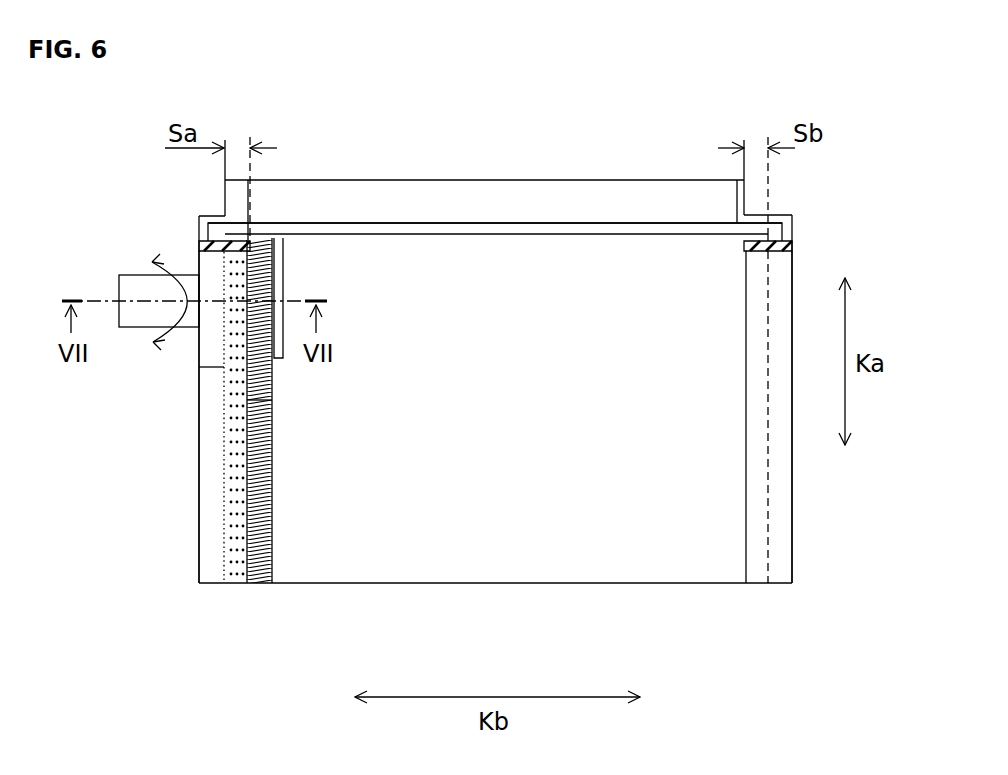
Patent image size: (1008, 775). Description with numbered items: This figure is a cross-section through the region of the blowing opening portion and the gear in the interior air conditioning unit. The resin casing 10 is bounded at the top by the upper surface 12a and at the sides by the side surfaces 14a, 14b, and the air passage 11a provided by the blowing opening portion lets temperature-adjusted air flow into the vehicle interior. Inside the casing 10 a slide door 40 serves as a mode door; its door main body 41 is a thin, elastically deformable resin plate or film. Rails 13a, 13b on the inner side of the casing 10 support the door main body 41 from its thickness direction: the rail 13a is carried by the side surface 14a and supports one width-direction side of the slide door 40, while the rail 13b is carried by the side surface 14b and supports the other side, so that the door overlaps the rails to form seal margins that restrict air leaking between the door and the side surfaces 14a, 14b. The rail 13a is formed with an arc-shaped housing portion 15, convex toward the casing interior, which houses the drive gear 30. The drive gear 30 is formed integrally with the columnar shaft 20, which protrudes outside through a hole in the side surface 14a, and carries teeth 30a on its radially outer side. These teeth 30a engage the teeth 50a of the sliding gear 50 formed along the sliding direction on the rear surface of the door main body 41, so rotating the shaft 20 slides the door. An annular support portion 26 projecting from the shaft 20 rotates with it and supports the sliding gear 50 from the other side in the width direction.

The casing 10 is at (796, 500).
The air passage 11a is at (690, 195).
The upper surface 12a is at (780, 213).
The rail 13a is at (212, 568).
The rail 13b is at (782, 565).
The side surface 14a is at (212, 502).
The side surface 14b is at (793, 467).
The housing portion 15 is at (206, 352).
The shaft 20 is at (137, 330).
The support portion 26 is at (284, 287).
The drive gear 30 is at (258, 277).
The teeth 30a is at (262, 260).
The slide door 40 is at (500, 240).
The door main body 41 is at (428, 232).
The sliding gear 50 is at (273, 498).
The teeth 50a is at (258, 452).